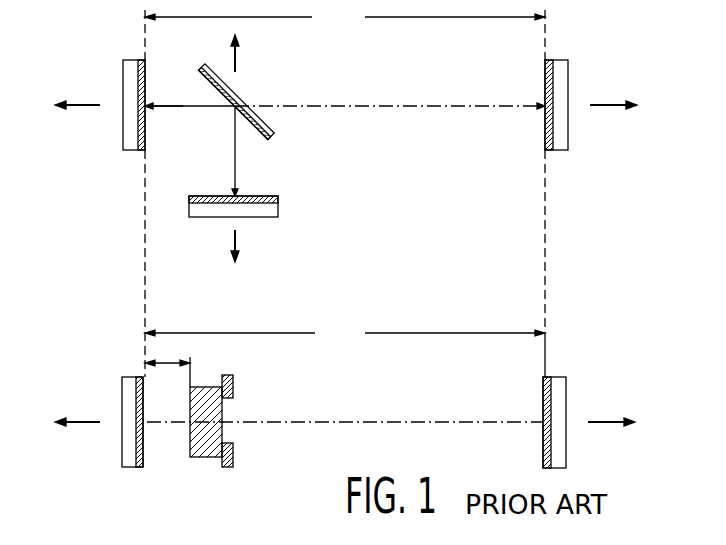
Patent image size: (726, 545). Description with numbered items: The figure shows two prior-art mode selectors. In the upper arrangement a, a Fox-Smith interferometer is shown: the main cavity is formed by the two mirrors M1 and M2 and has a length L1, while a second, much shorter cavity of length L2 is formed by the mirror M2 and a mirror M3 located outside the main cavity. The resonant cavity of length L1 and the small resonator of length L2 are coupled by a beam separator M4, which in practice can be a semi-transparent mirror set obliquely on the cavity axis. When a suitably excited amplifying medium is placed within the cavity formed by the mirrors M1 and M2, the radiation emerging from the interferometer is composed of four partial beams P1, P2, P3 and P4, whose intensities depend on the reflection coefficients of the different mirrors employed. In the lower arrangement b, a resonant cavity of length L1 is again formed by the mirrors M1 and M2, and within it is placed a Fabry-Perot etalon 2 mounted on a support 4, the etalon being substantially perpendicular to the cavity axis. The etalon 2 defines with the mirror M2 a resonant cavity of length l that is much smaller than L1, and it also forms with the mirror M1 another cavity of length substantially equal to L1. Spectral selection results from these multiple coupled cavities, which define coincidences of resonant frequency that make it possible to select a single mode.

The mirror M1 is at (550, 136).
The mirror M2 is at (126, 130).
The mirror M3 is at (262, 210).
The beam separator M4 is at (273, 132).
The partial beam P1 is at (612, 280).
The partial beam P2 is at (77, 248).
The partial beam P3 is at (222, 250).
The partial beam P4 is at (247, 53).
The main cavity length L1 is at (345, 178).
The second cavity length L2 is at (185, 110).
The etalon-to-mirror cavity length l is at (167, 352).
The Fabry-Perot etalon 2 is at (205, 447).
The support 4 is at (233, 388).
The Fox-Smith interferometer mode selector a is at (578, 47).
The Fabry-Perot etalon mode selector b is at (571, 346).